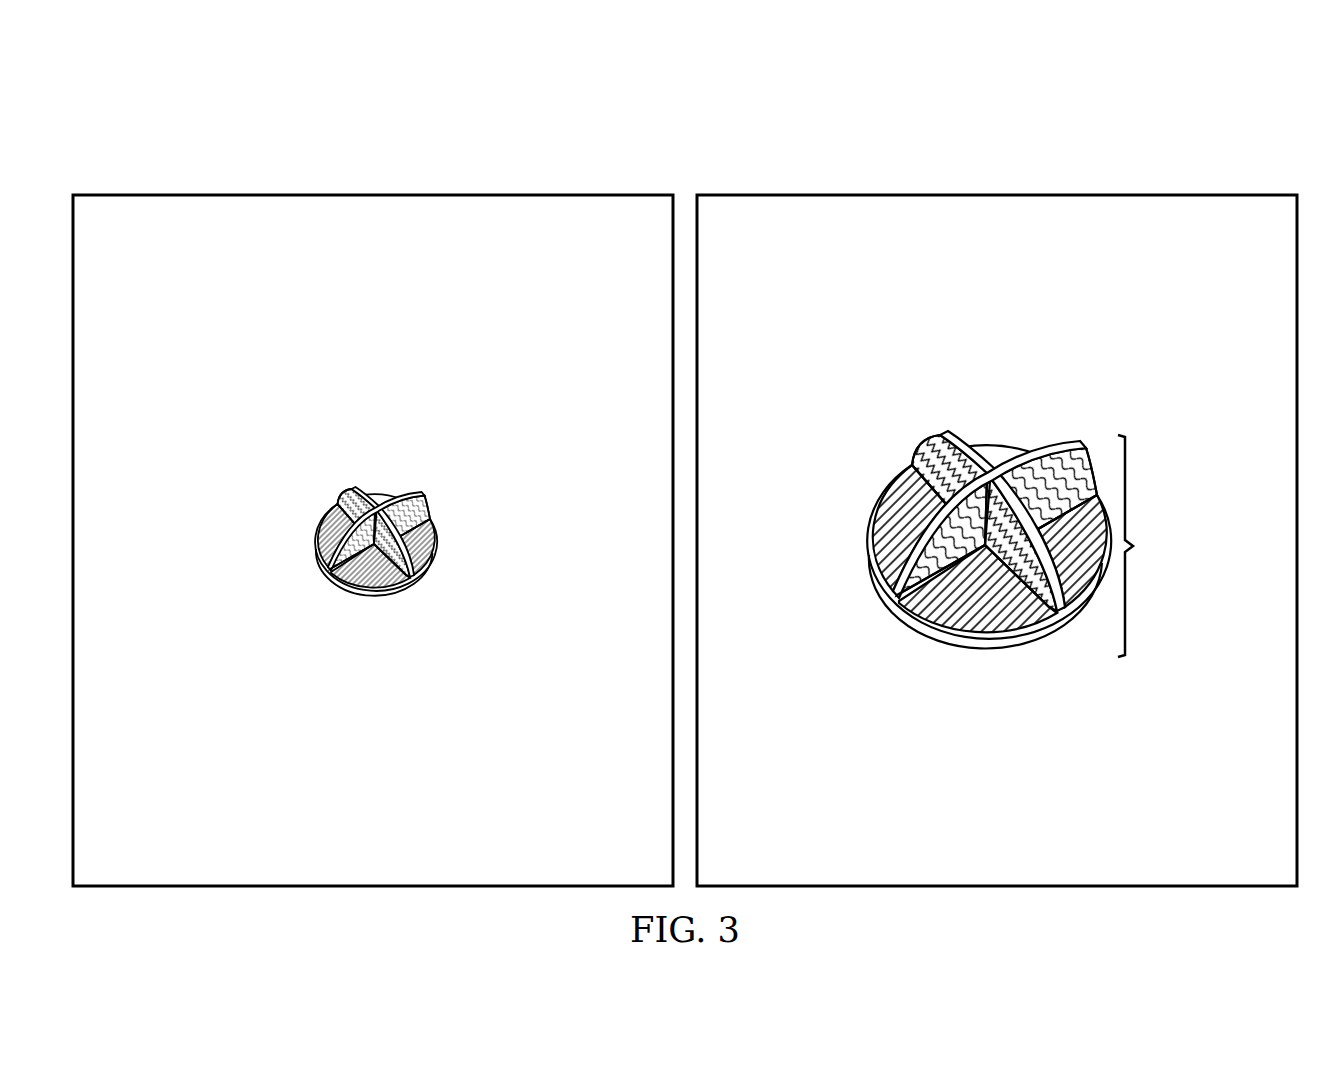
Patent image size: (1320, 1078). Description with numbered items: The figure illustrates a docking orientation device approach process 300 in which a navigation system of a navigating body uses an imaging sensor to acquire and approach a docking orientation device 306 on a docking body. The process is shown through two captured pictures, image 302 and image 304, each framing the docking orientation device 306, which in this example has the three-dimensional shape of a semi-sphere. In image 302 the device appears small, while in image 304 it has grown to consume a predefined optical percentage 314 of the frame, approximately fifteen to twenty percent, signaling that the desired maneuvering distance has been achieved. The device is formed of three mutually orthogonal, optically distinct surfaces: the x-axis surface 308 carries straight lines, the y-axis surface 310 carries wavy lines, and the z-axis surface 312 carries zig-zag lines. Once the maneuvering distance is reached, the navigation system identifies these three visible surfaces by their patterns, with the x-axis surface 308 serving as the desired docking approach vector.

The docking orientation device approach process 300 is at (456, 133).
The image 302 is at (236, 184).
The image 304 is at (1138, 184).
The docking orientation device 306 is at (672, 558).
The x-axis surface 308 is at (282, 523).
The y-axis surface 310 is at (400, 497).
The z-axis surface 312 is at (351, 492).
The predefined optical percentage 314 is at (1193, 546).